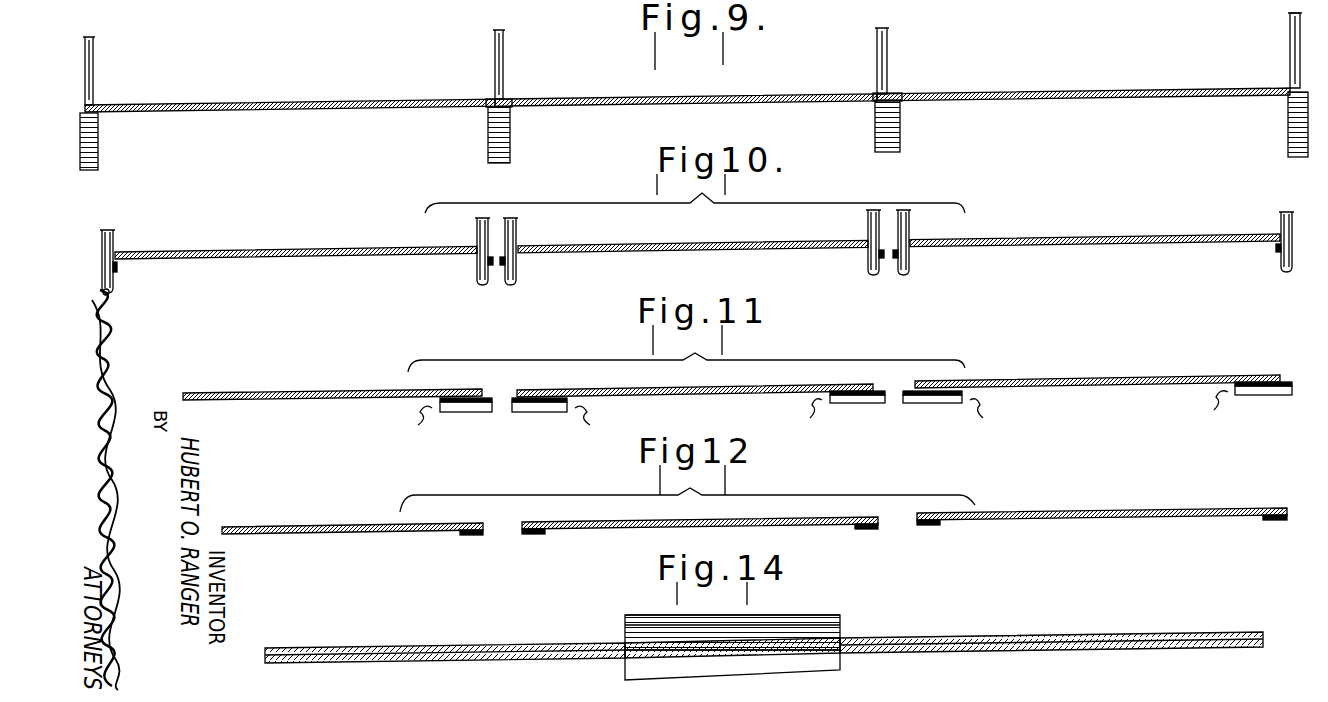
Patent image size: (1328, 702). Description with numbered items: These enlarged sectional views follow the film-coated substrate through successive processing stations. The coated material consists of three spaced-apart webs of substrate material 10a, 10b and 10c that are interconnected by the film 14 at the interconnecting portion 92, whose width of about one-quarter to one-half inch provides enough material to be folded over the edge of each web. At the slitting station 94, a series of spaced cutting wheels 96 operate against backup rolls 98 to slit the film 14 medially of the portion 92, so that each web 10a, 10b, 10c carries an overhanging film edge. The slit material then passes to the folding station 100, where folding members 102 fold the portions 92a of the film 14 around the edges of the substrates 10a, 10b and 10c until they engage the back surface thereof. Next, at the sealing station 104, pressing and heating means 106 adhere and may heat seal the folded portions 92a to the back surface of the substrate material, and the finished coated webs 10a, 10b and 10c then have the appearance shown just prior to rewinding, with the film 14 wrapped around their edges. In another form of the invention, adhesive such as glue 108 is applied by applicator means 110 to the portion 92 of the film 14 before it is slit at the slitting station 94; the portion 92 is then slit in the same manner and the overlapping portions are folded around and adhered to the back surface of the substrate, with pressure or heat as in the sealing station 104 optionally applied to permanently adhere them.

In FIG. 9, the film 14 is at (687, 103).
In FIG. 10, the film 14 is at (697, 248).
In FIG. 11, the film 14 is at (731, 404).
In FIG. 12, the film 14 is at (754, 515).
In FIG. 14, the film 14 is at (764, 633).
In FIG. 9, the web of substrate material 10a is at (1068, 100).
In FIG. 10, the web of substrate material 10a is at (1063, 240).
In FIG. 11, the web of substrate material 10a is at (1080, 383).
In FIG. 12, the web of substrate material 10a is at (328, 535).
In FIG. 14, the web of substrate material 10a is at (1030, 650).
In FIG. 9, the web of substrate material 10b is at (648, 100).
In FIG. 10, the web of substrate material 10b is at (665, 250).
In FIG. 11, the web of substrate material 10b is at (690, 392).
In FIG. 12, the web of substrate material 10b is at (812, 527).
In FIG. 14, the web of substrate material 10b is at (480, 660).
In FIG. 9, the web of substrate material 10c is at (300, 108).
In FIG. 10, the web of substrate material 10c is at (283, 258).
In FIG. 11, the web of substrate material 10c is at (272, 400).
In FIG. 9, the interconnecting film portion 92 is at (508, 102).
In FIG. 14, the interconnecting film portion 92 is at (652, 640).
In FIG. 10, the folded film portion 92a is at (114, 272).
In FIG. 11, the folded film portion 92a is at (475, 412).
In FIG. 12, the folded film portion 92a is at (478, 535).
In FIG. 9, the cutting or slitting station 94 is at (1200, 60).
In FIG. 9, the cutting wheel 96 is at (94, 68).
In FIG. 9, the backup roll 98 is at (98, 143).
In FIG. 10, the folding station 100 is at (1228, 200).
In FIG. 10, the folding member 102 is at (114, 238).
In FIG. 11, the sealing station 104 is at (1210, 345).
In FIG. 11, the pressing and heating means 106 is at (458, 415).
In FIG. 14, the glue 108 is at (622, 658).
In FIG. 14, the applicator means 110 is at (822, 625).